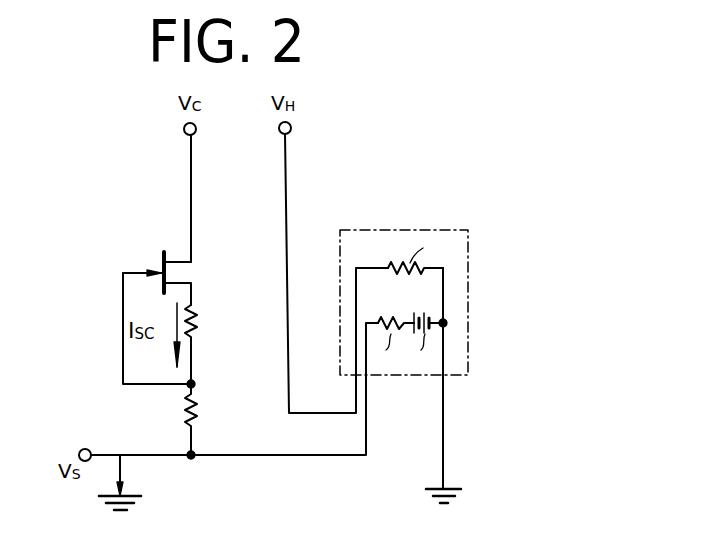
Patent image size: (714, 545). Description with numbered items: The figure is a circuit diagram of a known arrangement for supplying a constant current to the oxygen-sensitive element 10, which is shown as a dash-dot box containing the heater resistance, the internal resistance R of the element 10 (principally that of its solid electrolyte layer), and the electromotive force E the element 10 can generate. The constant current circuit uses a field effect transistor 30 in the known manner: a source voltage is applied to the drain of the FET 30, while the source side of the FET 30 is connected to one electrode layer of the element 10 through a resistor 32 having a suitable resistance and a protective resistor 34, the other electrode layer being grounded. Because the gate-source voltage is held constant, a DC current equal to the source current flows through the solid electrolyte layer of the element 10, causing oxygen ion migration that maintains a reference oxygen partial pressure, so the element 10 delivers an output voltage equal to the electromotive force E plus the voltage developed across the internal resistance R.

The oxygen-sensitive element 10 is at (470, 320).
The field effect transistor 30 is at (163, 263).
The resistor 32 is at (199, 326).
The protective resistor 34 is at (205, 409).